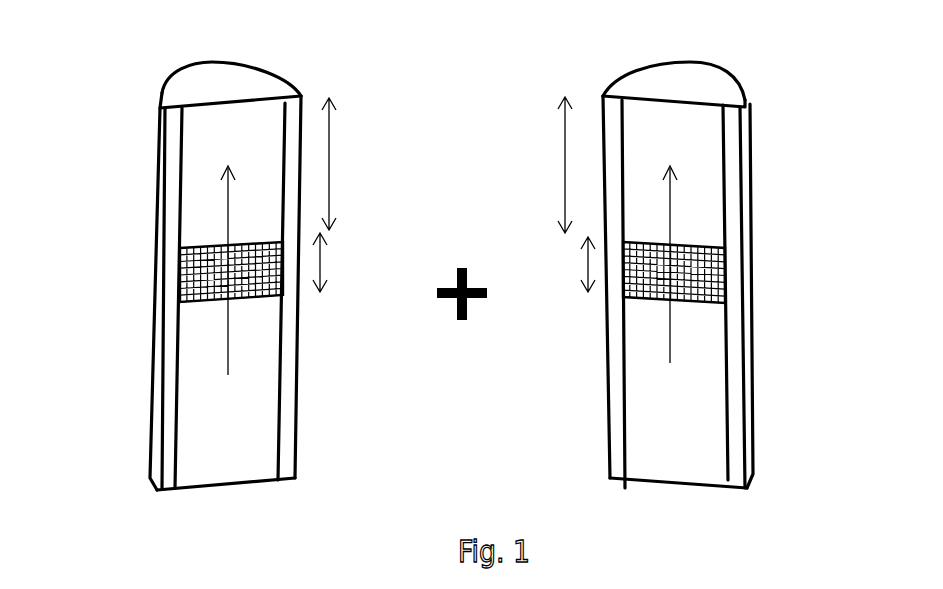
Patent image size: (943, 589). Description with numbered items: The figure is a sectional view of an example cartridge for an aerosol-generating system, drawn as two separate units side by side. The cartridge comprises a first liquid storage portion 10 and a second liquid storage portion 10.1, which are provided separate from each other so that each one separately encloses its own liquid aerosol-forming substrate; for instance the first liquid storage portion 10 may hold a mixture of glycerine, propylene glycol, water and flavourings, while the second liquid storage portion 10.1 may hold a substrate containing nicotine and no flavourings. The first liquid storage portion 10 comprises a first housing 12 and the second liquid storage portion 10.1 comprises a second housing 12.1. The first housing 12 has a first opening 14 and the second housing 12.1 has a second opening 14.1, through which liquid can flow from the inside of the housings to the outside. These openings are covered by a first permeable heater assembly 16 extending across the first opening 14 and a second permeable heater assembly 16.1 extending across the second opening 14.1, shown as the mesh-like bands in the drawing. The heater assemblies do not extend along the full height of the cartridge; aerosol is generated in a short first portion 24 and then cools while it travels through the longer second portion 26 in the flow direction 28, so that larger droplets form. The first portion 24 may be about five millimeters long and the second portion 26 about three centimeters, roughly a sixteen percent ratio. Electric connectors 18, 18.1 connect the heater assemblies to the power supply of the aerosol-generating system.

The first liquid storage portion 10 is at (177, 78).
The first housing 12 is at (205, 373).
The first opening 14 is at (181, 272).
The first permeable heater assembly 16 is at (231, 272).
The electric connector 18 is at (177, 198).
The first portion 24 is at (336, 262).
The second portion 26 is at (345, 164).
The flow direction 28 is at (234, 259).
The second liquid storage portion 10.1 is at (727, 80).
The second housing 12.1 is at (698, 372).
The second opening 14.1 is at (725, 270).
The second permeable heater assembly 16.1 is at (674, 272).
The electric connector 18.1 is at (732, 196).